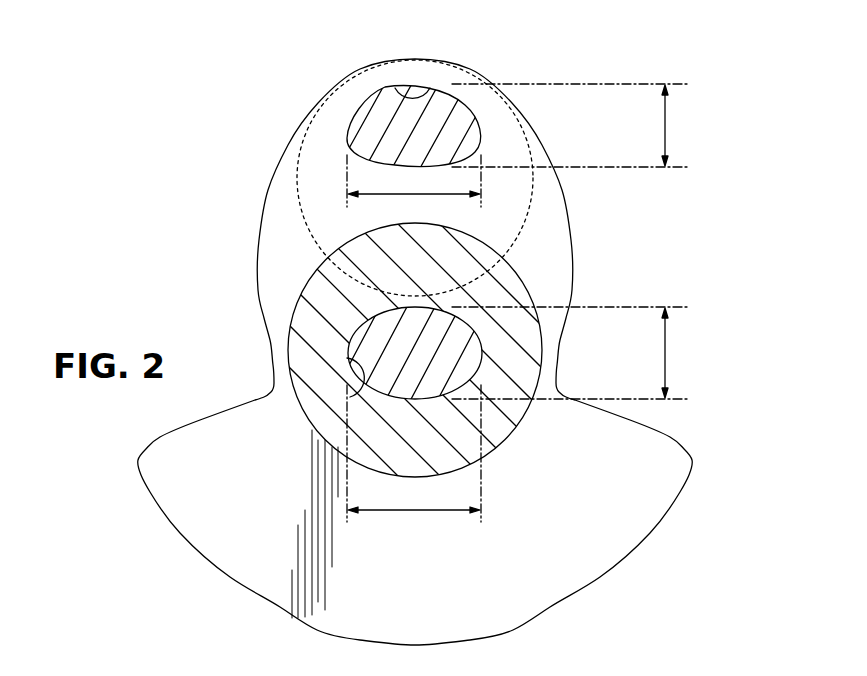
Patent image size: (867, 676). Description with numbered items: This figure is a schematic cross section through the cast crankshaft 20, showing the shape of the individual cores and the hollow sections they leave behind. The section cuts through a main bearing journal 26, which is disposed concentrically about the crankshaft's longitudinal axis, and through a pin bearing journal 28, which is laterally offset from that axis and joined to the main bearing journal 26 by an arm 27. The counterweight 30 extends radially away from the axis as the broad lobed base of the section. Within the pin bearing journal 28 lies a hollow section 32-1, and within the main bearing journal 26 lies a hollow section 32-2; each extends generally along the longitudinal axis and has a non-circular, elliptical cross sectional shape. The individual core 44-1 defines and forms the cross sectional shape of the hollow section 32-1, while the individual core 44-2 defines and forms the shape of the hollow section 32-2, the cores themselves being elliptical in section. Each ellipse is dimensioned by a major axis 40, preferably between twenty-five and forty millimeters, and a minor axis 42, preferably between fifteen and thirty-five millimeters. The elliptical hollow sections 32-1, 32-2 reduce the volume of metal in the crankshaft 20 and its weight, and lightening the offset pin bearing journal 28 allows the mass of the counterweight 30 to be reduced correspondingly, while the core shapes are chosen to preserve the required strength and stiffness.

The crankshaft 20 is at (214, 238).
The main bearing journal 26 is at (288, 352).
The arm 27 is at (578, 256).
The pin bearing journal 28 is at (297, 197).
The counterweight 30 is at (643, 485).
The hollow section 32-1 is at (392, 92).
The hollow section 32-2 is at (360, 380).
The major axis 40 is at (385, 192).
The minor axis 42 is at (665, 132).
The individual core 44-1 is at (375, 120).
The individual core 44-2 is at (453, 375).